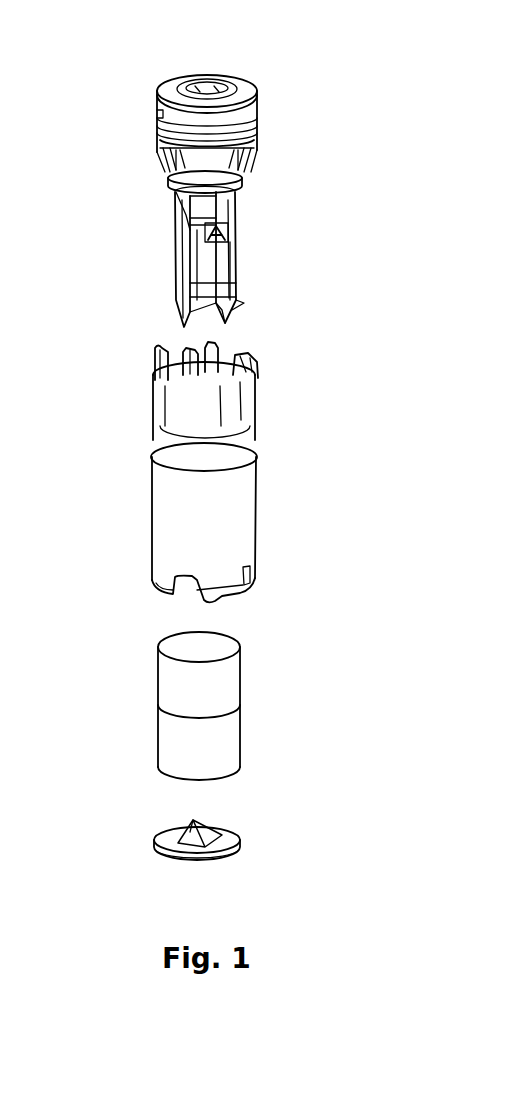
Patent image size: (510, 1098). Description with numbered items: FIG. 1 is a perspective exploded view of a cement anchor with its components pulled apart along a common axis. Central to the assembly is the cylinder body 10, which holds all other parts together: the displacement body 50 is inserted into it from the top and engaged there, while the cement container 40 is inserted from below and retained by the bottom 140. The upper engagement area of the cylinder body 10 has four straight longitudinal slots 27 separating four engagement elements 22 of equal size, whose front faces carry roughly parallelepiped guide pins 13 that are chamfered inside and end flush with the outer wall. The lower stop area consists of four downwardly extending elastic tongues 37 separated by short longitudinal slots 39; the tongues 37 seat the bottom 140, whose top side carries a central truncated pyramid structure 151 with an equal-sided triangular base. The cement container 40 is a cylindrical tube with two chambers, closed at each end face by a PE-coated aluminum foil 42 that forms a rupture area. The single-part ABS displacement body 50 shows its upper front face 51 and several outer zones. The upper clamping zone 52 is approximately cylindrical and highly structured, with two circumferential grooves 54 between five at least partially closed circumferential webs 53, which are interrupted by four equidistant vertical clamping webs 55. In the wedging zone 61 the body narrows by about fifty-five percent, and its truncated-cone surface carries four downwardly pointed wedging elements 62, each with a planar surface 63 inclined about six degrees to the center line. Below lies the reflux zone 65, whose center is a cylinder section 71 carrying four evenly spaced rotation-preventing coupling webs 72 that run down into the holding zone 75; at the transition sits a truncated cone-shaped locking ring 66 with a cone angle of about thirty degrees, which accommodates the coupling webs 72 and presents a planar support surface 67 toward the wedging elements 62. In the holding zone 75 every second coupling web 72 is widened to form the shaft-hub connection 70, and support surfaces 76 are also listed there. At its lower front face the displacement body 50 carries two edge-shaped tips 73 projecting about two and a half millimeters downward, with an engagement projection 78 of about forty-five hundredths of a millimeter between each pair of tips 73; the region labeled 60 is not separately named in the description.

The cylinder body 10 is at (200, 478).
The guide pins 13 is at (247, 370).
The engagement elements 22 is at (190, 420).
The longitudinal slots 27 is at (230, 395).
The elastic tongues 37 is at (220, 594).
The longitudinal slots 39 is at (185, 589).
The cement container 40 is at (255, 700).
The aluminum foil 42 is at (213, 645).
The displacement body 50 is at (205, 108).
The upper front face 51 is at (265, 97).
The clamping zone 52 is at (256, 108).
The circumferential webs 53 is at (253, 138).
The circumferential grooves 54 is at (177, 128).
The clamping webs 55 is at (162, 111).
The inner body 60 is at (205, 253).
The wedging zone 61 is at (260, 167).
The wedging elements 62 is at (252, 156).
The surface 63 is at (253, 151).
The reflux zone 65 is at (252, 202).
The locking ring 66 is at (180, 207).
The support surface 67 is at (168, 180).
The shaft-hub connection 70 is at (242, 246).
The cylinder section 71 is at (213, 260).
The coupling webs 72 is at (202, 234).
The tips 73 is at (225, 314).
The holding zone 75 is at (229, 303).
The support surfaces 76 is at (195, 300).
The engagement projection 78 is at (243, 305).
The bottom 140 is at (136, 827).
The truncated pyramid structure 151 is at (190, 824).